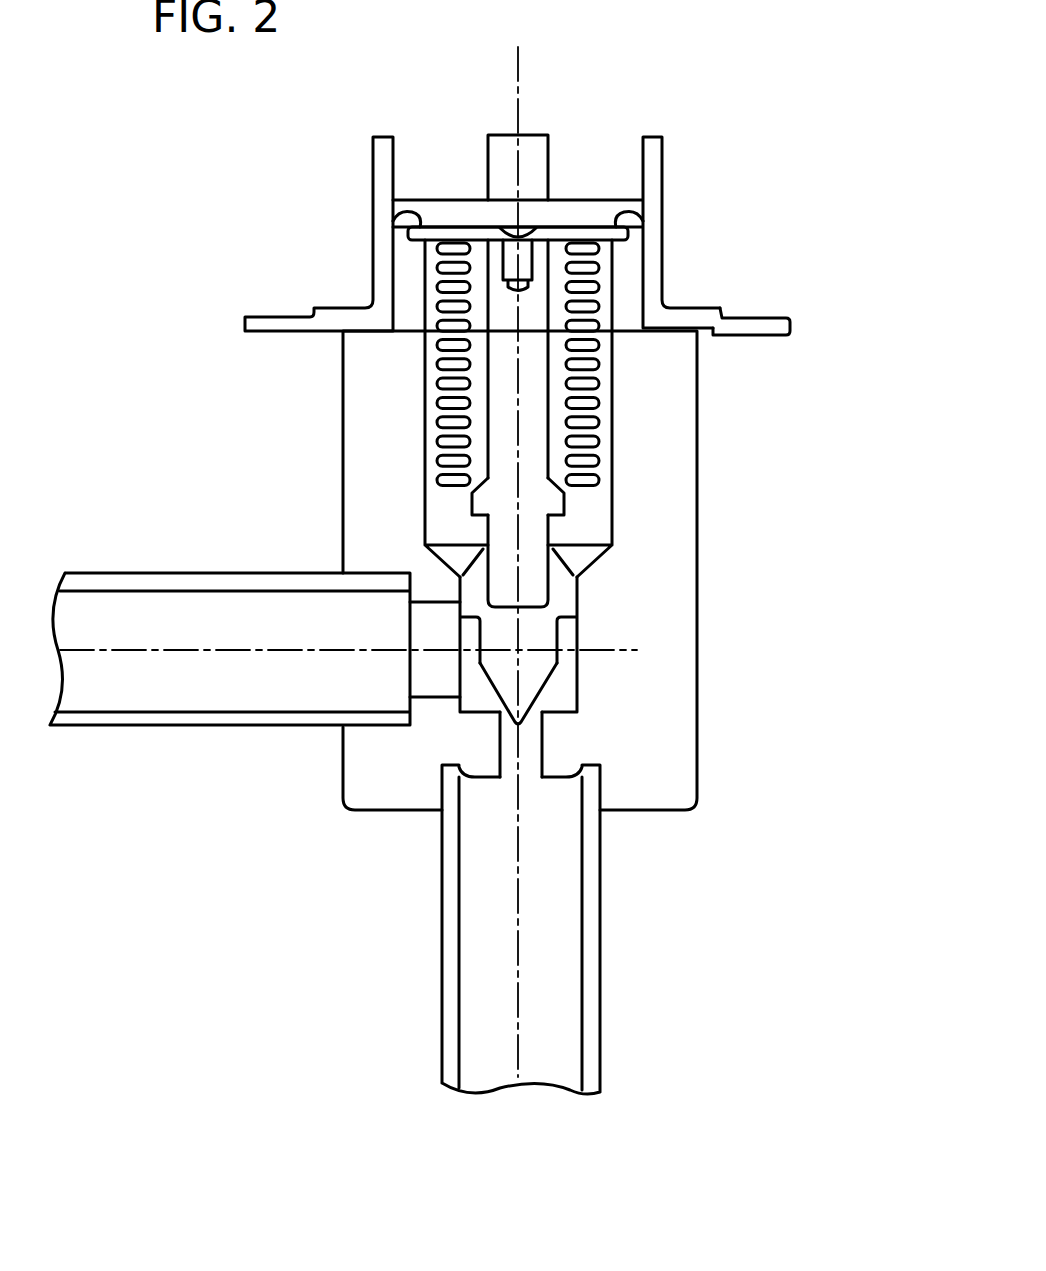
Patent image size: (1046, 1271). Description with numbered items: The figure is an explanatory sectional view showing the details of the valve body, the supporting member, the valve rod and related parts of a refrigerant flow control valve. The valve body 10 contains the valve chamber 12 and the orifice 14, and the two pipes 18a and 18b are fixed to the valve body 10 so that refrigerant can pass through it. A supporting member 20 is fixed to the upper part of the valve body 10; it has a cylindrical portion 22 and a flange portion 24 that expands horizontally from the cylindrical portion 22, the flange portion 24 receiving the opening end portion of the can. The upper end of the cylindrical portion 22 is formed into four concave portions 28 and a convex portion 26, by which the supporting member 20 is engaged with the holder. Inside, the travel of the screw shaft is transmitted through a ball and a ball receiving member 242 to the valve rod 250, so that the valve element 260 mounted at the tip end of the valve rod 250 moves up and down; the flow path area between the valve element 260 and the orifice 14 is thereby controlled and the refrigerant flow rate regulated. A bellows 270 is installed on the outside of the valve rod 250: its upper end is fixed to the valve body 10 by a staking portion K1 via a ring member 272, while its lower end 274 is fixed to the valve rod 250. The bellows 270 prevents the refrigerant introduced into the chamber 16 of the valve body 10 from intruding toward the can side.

The valve body 10 is at (682, 582).
The valve chamber 12 is at (570, 688).
The orifice 14 is at (530, 752).
The chamber 16 is at (447, 513).
The pipe 18a is at (123, 723).
The pipe 18b is at (452, 1000).
The supporting member 20 is at (698, 305).
The cylindrical portion 22 is at (385, 240).
The flange portion 24 is at (763, 316).
The convex portion 26 is at (542, 150).
The concave portions 28 is at (597, 198).
The ball receiving member 242 is at (498, 228).
The valve rod 250 is at (507, 428).
The valve element 260 is at (508, 682).
The bellows 270 is at (596, 428).
The ring member 272 is at (622, 210).
The lower end 274 is at (563, 500).
The staking portion K1 is at (396, 217).